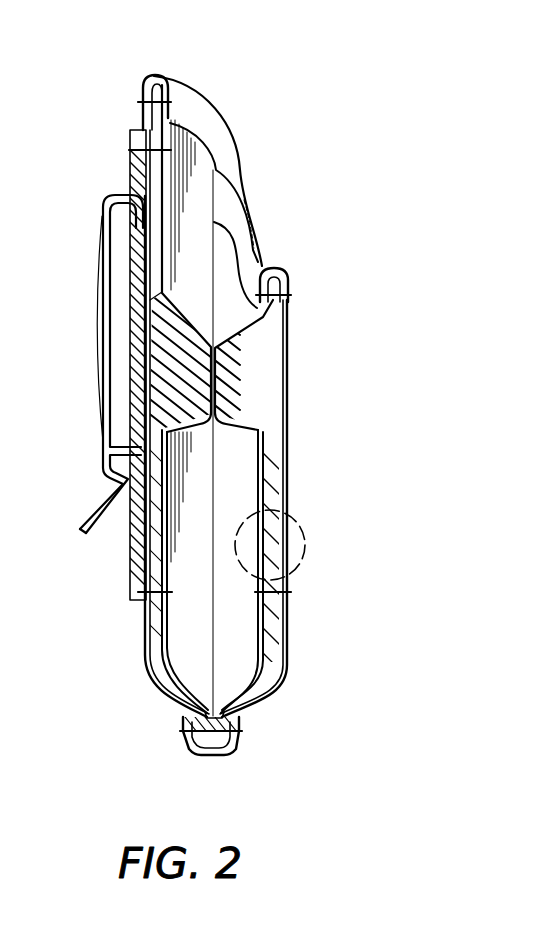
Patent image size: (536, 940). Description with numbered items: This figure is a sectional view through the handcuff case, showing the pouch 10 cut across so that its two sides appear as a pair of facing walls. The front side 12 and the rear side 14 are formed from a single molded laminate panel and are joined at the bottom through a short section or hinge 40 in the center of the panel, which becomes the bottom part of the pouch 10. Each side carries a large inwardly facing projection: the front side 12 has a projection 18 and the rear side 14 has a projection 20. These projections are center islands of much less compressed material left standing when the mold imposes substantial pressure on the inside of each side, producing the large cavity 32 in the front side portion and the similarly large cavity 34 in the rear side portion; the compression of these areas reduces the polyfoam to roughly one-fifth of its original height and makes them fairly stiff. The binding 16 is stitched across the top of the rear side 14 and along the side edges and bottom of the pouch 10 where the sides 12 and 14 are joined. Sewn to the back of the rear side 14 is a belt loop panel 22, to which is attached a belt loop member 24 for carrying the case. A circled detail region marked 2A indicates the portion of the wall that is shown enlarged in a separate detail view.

The pouch 10 is at (240, 100).
The front side 12 is at (285, 463).
The rear side 14 is at (145, 628).
The binding 16 is at (146, 93).
The projection 18 is at (233, 423).
The projection 20 is at (186, 328).
The belt loop panel 22 is at (130, 160).
The belt loop member 24 is at (100, 232).
The cavity 32 is at (257, 598).
The cavity 34 is at (172, 598).
The hinge 40 is at (180, 716).
The detail view indicator 2A is at (300, 575).